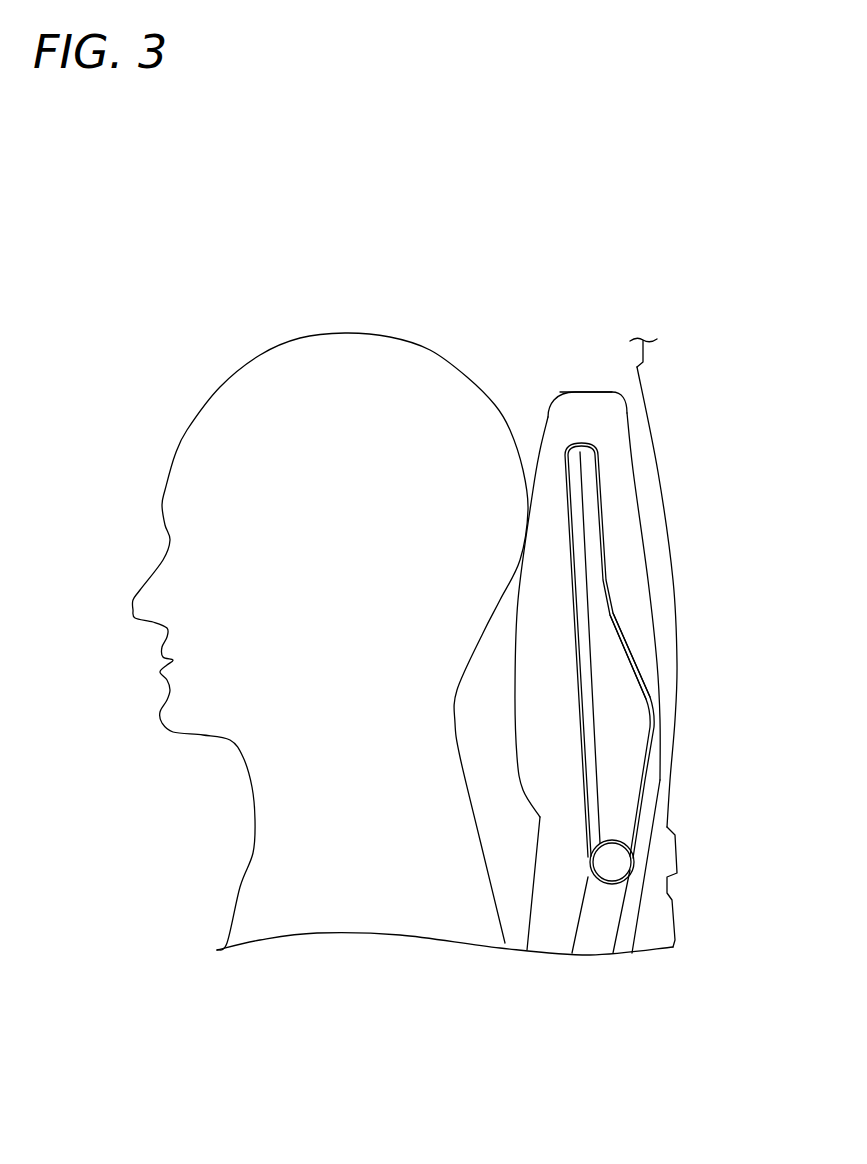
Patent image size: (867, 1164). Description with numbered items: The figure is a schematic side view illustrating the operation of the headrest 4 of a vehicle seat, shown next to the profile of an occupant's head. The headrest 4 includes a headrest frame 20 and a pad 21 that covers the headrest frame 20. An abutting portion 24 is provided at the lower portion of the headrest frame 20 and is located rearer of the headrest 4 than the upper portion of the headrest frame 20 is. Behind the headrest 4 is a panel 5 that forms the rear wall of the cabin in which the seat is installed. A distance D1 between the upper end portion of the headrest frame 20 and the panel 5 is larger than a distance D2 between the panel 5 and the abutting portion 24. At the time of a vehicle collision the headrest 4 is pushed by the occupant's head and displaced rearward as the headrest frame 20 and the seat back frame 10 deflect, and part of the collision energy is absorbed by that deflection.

The headrest 4 is at (578, 380).
The panel 5 is at (686, 922).
The seat back frame 10 is at (563, 928).
The headrest frame 20 is at (557, 440).
The pad 21 is at (608, 403).
The abutting portion 24 is at (640, 677).
The distance D1 is at (558, 470).
The distance D2 is at (630, 727).